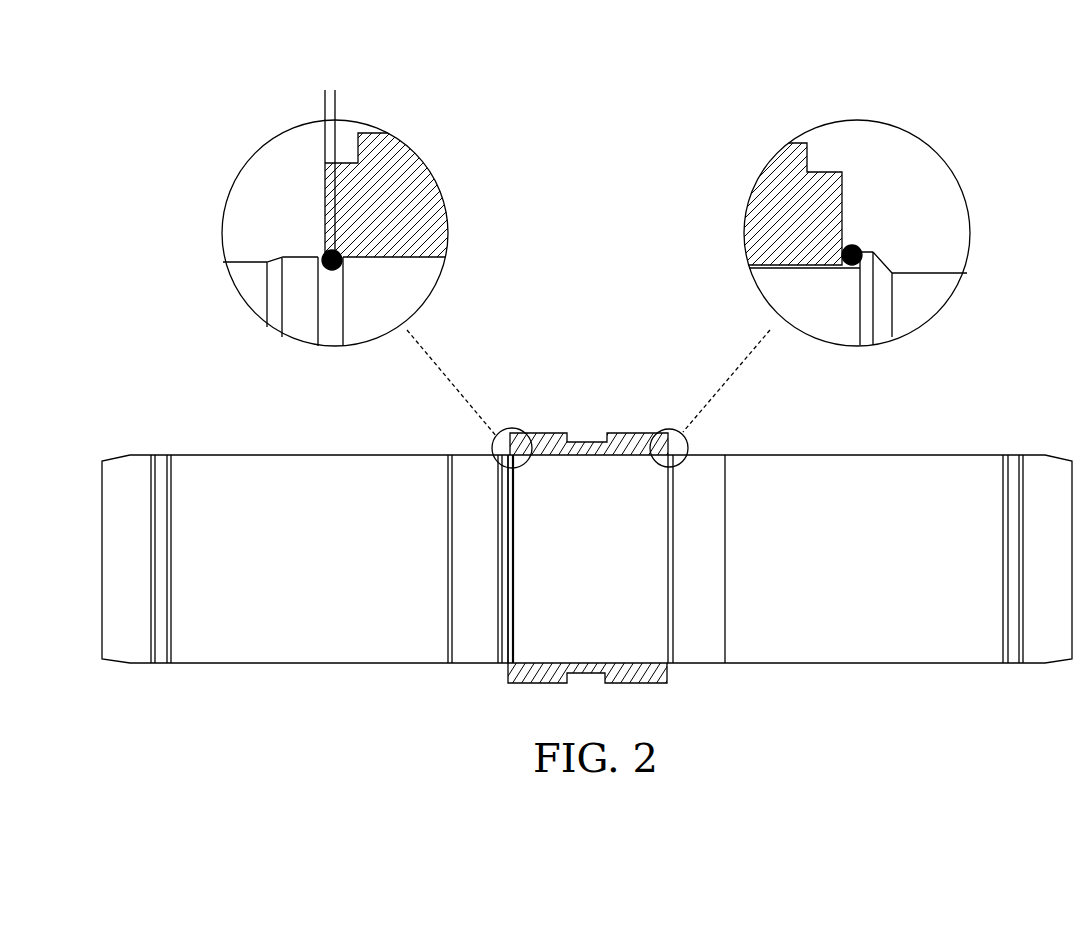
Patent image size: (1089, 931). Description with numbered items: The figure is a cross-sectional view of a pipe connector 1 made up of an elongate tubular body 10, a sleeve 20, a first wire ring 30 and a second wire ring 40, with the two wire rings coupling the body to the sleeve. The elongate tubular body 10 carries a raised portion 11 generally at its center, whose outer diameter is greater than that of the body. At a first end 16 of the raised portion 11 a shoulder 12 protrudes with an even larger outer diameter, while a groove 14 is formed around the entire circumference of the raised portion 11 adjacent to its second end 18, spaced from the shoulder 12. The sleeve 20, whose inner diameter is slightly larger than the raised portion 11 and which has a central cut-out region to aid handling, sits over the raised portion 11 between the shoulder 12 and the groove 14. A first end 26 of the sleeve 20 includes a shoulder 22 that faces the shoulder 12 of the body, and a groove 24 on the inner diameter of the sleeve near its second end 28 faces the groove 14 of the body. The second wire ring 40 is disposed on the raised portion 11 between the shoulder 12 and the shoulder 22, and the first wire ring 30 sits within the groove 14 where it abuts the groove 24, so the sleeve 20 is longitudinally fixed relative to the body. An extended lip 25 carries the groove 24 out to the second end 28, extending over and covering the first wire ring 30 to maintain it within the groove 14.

The pipe connector 1 is at (772, 748).
The elongate tubular body 10 is at (793, 632).
The raised portion 11 is at (552, 453).
The shoulder 12 is at (880, 258).
The groove 14 is at (333, 325).
The first end 16 is at (900, 258).
The second end 18 is at (282, 245).
The sleeve 20 is at (603, 413).
The shoulder 22 is at (861, 244).
The groove 24 is at (345, 247).
The extended lip 25 is at (348, 92).
The first end 26 is at (851, 160).
The second end 28 is at (312, 192).
The first wire ring 30 is at (326, 254).
The second wire ring 40 is at (866, 254).